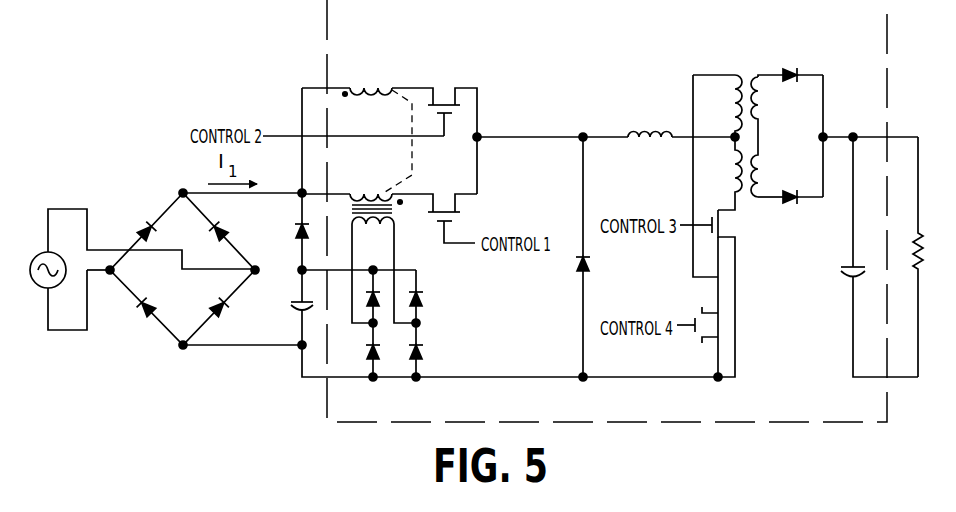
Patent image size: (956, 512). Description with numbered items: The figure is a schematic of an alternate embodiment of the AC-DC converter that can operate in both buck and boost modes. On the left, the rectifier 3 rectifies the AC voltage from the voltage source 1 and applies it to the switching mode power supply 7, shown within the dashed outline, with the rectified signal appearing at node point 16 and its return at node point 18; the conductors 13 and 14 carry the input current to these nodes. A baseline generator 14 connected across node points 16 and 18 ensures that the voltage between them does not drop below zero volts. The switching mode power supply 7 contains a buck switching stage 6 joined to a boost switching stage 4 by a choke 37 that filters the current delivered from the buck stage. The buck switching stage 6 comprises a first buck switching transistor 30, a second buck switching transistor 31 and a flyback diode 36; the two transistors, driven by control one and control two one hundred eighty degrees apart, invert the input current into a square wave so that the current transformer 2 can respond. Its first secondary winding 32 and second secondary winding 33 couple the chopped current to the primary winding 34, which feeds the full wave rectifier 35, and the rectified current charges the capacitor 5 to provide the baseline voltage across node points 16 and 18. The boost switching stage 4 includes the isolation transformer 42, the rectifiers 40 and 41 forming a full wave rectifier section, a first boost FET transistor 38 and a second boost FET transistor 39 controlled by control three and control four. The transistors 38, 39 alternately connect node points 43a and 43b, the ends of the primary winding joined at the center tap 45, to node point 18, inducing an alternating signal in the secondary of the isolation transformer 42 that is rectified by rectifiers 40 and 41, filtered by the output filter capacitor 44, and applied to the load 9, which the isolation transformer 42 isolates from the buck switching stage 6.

The voltage source 1 is at (48, 252).
The current transformer 2 is at (379, 164).
The rectifier 3 is at (135, 203).
The boost switching stage 4 is at (708, 142).
The capacitor 5 is at (290, 305).
The buck switching stage 6 is at (503, 113).
The switching mode power supply 7 is at (713, 423).
The load 9 is at (915, 243).
The positive input line 13 is at (247, 177).
The baseline generator 14 is at (237, 371).
The node point 16 is at (298, 197).
The node point 18 is at (301, 348).
The first buck switching transistor 30 is at (458, 212).
The second buck switching transistor 31 is at (456, 108).
The first secondary winding 32 is at (372, 95).
The second secondary winding 33 is at (381, 192).
The primary winding 34 is at (373, 226).
The full wave rectifier 35 is at (449, 315).
The flyback diode 36 is at (579, 265).
The choke 37 is at (653, 128).
The first boost FET transistor 38 is at (717, 239).
The second boost FET transistor 39 is at (703, 338).
The rectifier 40 is at (795, 203).
The rectifier 41 is at (792, 69).
The isolation transformer 42 is at (750, 71).
The node point 43a is at (716, 77).
The node point 43b is at (740, 197).
The output filter capacitor 44 is at (840, 270).
The center tap 45 is at (732, 131).